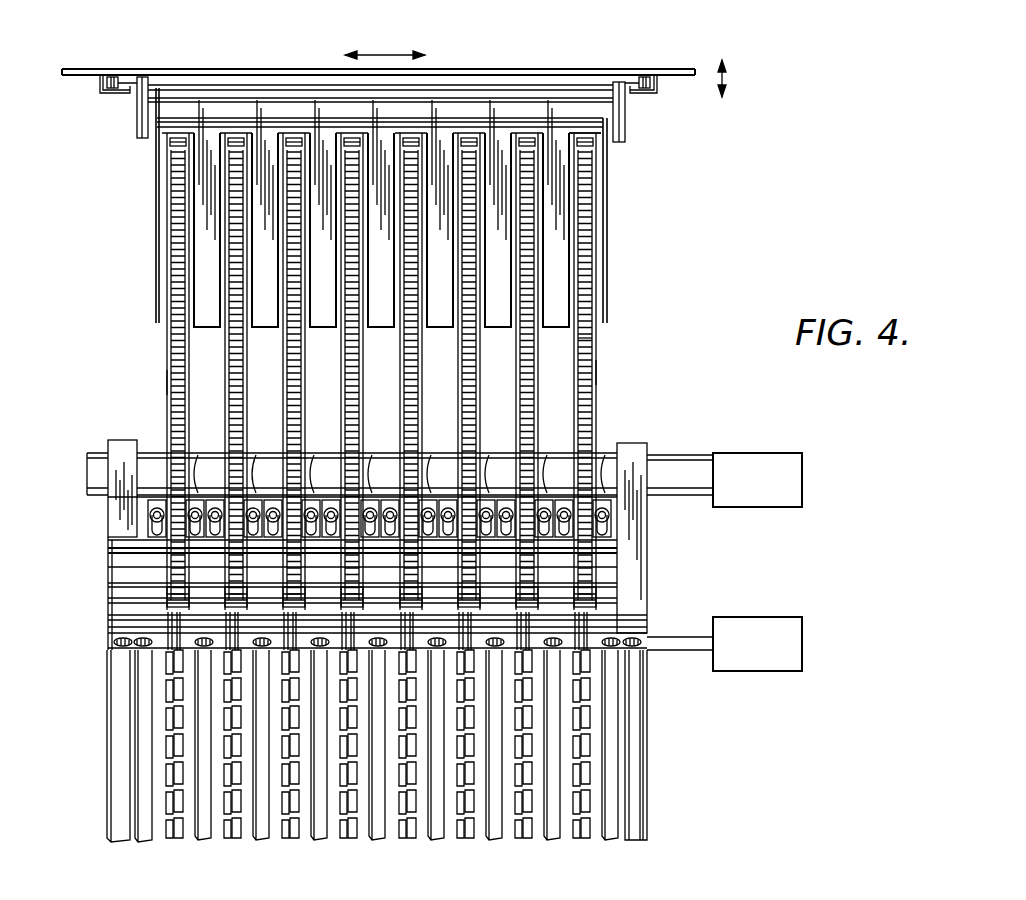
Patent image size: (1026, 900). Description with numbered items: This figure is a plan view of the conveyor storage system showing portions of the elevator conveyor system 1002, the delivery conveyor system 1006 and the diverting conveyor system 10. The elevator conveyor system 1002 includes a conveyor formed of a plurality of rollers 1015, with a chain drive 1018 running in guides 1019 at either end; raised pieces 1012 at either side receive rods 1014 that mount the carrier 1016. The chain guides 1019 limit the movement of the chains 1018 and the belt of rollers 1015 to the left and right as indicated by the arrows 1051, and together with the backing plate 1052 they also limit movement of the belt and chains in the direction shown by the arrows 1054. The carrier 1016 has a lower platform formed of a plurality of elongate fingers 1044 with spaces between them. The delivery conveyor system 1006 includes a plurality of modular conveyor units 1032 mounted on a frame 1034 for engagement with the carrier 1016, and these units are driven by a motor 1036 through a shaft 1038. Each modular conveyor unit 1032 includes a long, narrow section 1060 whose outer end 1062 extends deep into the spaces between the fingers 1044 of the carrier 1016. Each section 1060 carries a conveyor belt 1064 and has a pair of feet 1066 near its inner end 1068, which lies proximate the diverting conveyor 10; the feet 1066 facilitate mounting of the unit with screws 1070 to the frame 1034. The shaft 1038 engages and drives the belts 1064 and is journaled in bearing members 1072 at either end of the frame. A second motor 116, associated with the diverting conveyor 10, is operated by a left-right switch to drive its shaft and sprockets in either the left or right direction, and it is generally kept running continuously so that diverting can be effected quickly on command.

The diverting conveyor system 10 is at (652, 757).
The motor 116 is at (773, 618).
The elevator conveyor system 1002 is at (156, 232).
The delivery conveyor system 1006 is at (158, 381).
The raised pieces 1012 is at (141, 140).
The rods 1014 is at (628, 124).
The rollers 1015 is at (512, 76).
The carrier 1016 is at (606, 228).
The chain drive 1018 is at (117, 79).
The guides 1019 is at (120, 94).
The modular conveyor units 1032 is at (597, 407).
The frame 1034 is at (618, 552).
The motor 1036 is at (778, 452).
The shaft 1038 is at (690, 488).
The elongate fingers 1044 is at (262, 320).
The arrows 1051 is at (374, 54).
The backing plate 1052 is at (588, 68).
The arrows 1054 is at (758, 77).
The long, narrow section 1060 is at (600, 372).
The outer end 1062 is at (600, 165).
The conveyor belt 1064 is at (584, 338).
The feet 1066 is at (563, 544).
The inner end 1068 is at (640, 640).
The screws 1070 is at (578, 542).
The bearing members 1072 is at (122, 446).